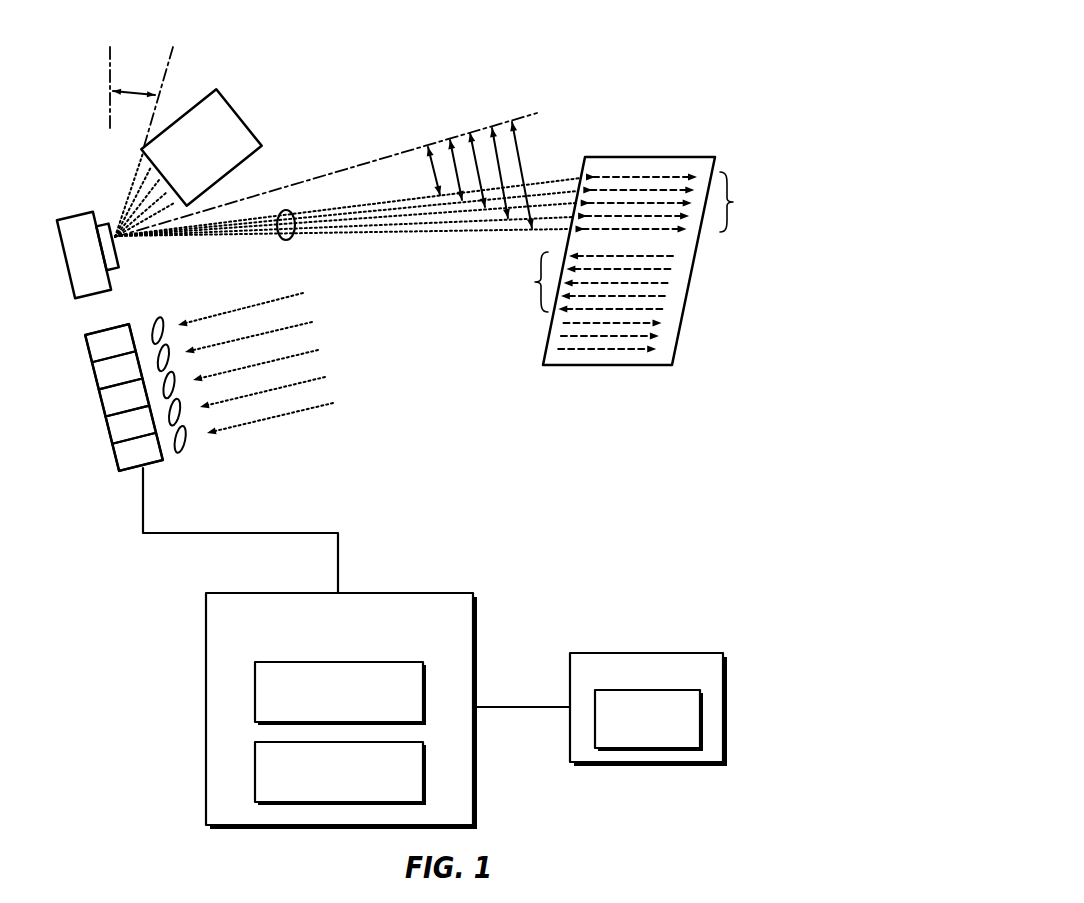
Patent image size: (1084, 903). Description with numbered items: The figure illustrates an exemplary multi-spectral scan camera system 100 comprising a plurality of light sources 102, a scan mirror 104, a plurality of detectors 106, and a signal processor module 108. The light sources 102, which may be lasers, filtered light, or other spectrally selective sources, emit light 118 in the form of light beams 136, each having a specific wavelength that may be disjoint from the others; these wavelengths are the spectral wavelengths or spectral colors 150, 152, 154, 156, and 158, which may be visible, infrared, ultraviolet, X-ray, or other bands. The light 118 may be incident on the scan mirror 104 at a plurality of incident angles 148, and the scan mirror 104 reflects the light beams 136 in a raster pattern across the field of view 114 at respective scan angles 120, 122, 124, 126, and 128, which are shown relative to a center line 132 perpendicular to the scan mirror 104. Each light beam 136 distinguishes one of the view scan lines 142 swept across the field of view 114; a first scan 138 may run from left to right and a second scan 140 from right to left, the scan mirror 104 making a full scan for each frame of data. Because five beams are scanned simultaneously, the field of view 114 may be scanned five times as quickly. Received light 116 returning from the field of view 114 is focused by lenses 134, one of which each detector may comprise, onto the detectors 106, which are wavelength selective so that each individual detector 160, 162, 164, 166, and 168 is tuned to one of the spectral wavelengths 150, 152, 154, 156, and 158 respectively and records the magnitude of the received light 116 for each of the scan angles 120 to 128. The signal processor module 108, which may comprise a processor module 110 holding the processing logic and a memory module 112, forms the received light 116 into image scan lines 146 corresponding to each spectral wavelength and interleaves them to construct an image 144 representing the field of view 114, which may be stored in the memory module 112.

The multi-spectral scan camera system 100 is at (596, 37).
The light sources 102 is at (229, 130).
The scan mirror 104 is at (80, 268).
The detectors 106 is at (90, 434).
The signal processor module 108 is at (306, 707).
The processor module 110 is at (255, 680).
The memory module 112 is at (255, 763).
The field of view 114 is at (633, 232).
The received light 116 is at (284, 381).
The light 118 is at (123, 188).
The scan angle 120 is at (427, 148).
The scan angle 122 is at (449, 141).
The scan angle 124 is at (469, 134).
The scan angle 126 is at (491, 129).
The scan angle 128 is at (519, 157).
The center line 132 is at (351, 165).
The lenses 134 is at (187, 456).
The light beams 136 is at (285, 243).
The first scan 138 is at (722, 166).
The second scan 140 is at (537, 311).
The view scan lines 142 is at (635, 177).
The image 144 is at (677, 683).
The image scan lines 146 is at (703, 703).
The incident angles 148 is at (134, 90).
The spectral wavelength 150 is at (294, 294).
The spectral wavelength 152 is at (303, 323).
The spectral wavelength 154 is at (309, 351).
The spectral wavelength 156 is at (316, 378).
The spectral wavelength 158 is at (324, 404).
The detector 160 is at (88, 349).
The detector 162 is at (95, 376).
The detector 164 is at (102, 403).
The detector 166 is at (109, 430).
The detector 168 is at (116, 457).